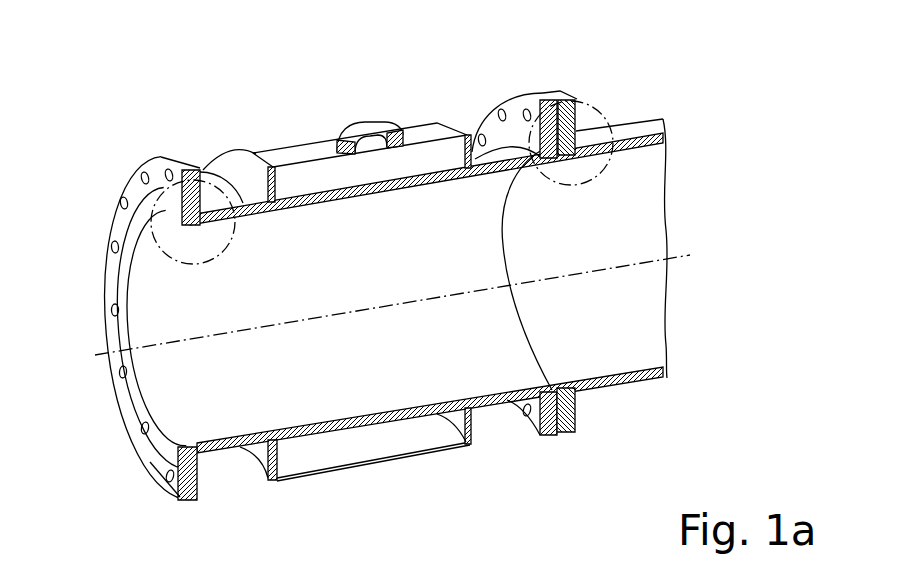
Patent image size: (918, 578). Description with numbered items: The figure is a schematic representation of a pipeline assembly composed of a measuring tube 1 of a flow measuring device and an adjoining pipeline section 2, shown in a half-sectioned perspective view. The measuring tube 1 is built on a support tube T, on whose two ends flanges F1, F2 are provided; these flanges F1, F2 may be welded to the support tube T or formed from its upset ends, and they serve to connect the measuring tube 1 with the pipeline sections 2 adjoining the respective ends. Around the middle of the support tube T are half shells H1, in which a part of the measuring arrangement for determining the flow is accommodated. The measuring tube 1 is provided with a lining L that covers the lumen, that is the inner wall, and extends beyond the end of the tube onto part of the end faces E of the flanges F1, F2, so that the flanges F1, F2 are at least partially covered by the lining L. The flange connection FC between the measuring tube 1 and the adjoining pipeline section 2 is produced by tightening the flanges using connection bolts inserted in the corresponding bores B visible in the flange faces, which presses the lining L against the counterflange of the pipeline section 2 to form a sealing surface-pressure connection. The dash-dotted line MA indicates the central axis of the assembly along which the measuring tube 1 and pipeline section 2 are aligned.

The measuring tube 1 is at (553, 452).
The pipeline section 2 is at (553, 452).
The flange F1 is at (512, 108).
The flange F2 is at (120, 287).
The flange connection FC is at (572, 68).
The bores B is at (112, 245).
The support tube T is at (247, 205).
The half shells H1 is at (433, 123).
The end faces E is at (563, 178).
The lining L is at (180, 430).
The main axis MA is at (688, 256).